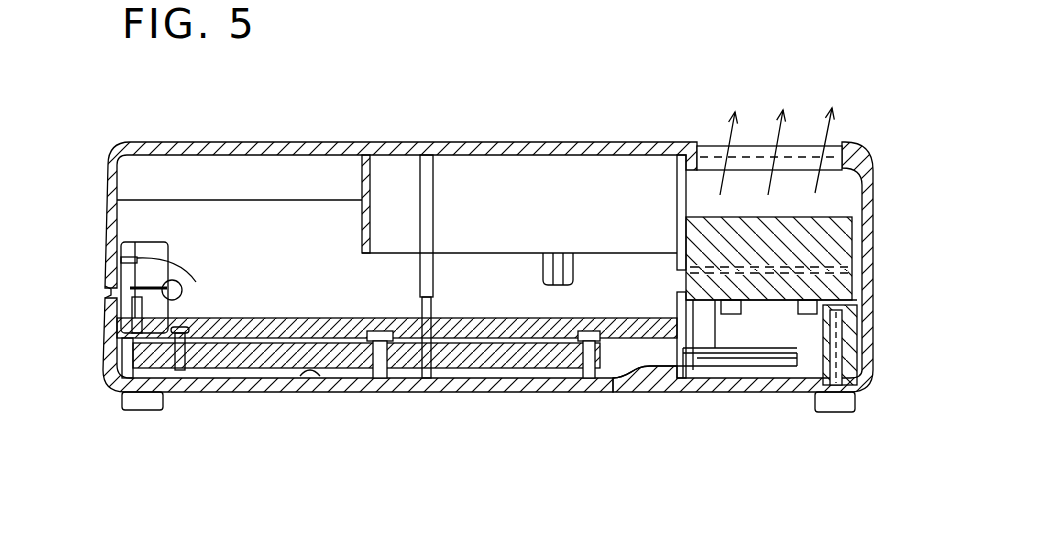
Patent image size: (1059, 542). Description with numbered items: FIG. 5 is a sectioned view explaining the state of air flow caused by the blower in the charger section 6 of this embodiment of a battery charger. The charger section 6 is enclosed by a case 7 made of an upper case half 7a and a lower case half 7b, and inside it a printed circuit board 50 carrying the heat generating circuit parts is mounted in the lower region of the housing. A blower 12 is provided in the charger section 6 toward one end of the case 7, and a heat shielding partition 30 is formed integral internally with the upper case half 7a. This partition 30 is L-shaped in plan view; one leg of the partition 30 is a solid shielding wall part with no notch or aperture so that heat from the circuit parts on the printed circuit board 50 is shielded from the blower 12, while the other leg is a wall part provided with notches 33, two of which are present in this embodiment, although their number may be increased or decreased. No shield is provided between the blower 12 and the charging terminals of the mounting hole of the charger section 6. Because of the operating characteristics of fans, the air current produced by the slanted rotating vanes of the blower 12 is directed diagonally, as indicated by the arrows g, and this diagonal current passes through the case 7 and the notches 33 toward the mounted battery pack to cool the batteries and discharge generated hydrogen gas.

The charger section 6 is at (453, 320).
The case 7 is at (102, 302).
The upper case half 7a is at (112, 223).
The lower case half 7b is at (110, 353).
The blower 12 is at (833, 238).
The heat shielding partition 30 is at (678, 207).
The notches 33 is at (803, 315).
The printed circuit board 50 is at (540, 343).
The arrows indicating air current g is at (832, 108).